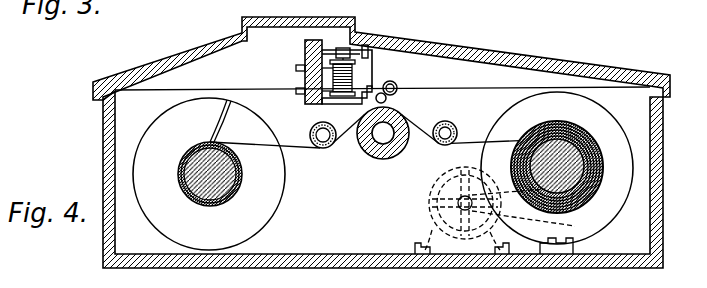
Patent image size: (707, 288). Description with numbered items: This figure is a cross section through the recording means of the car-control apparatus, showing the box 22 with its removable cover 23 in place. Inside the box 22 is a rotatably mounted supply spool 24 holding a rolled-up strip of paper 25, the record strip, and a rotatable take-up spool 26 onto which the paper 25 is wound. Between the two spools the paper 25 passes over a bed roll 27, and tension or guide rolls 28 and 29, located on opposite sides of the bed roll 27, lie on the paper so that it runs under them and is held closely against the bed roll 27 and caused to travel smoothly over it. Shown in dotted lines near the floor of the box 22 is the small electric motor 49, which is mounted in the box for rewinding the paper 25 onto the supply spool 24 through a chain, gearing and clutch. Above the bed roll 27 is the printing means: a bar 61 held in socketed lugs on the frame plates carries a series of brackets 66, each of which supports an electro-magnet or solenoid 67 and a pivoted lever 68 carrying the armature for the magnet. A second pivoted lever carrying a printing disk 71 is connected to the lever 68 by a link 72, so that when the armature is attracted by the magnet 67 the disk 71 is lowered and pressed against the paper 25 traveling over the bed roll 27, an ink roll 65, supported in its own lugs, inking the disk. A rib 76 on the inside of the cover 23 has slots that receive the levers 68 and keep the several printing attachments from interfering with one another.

The box 22 is at (641, 221).
The removable cover 23 is at (512, 50).
The supply spool 24 is at (588, 142).
The strip of paper 25 is at (476, 130).
The take-up spool 26 is at (236, 190).
The bed roll 27 is at (379, 159).
The tension or guide roll 28 is at (311, 130).
The tension or guide roll 29 is at (448, 120).
The electric motor 49 is at (430, 219).
The bar 61 is at (305, 55).
The ink roll 65 is at (397, 84).
The bracket 66 is at (336, 105).
The electro-magnet or solenoid 67 is at (352, 72).
The pivoted lever 68 is at (343, 47).
The printing disk 71 is at (387, 101).
The link 72 is at (374, 50).
The rib 76 is at (368, 44).